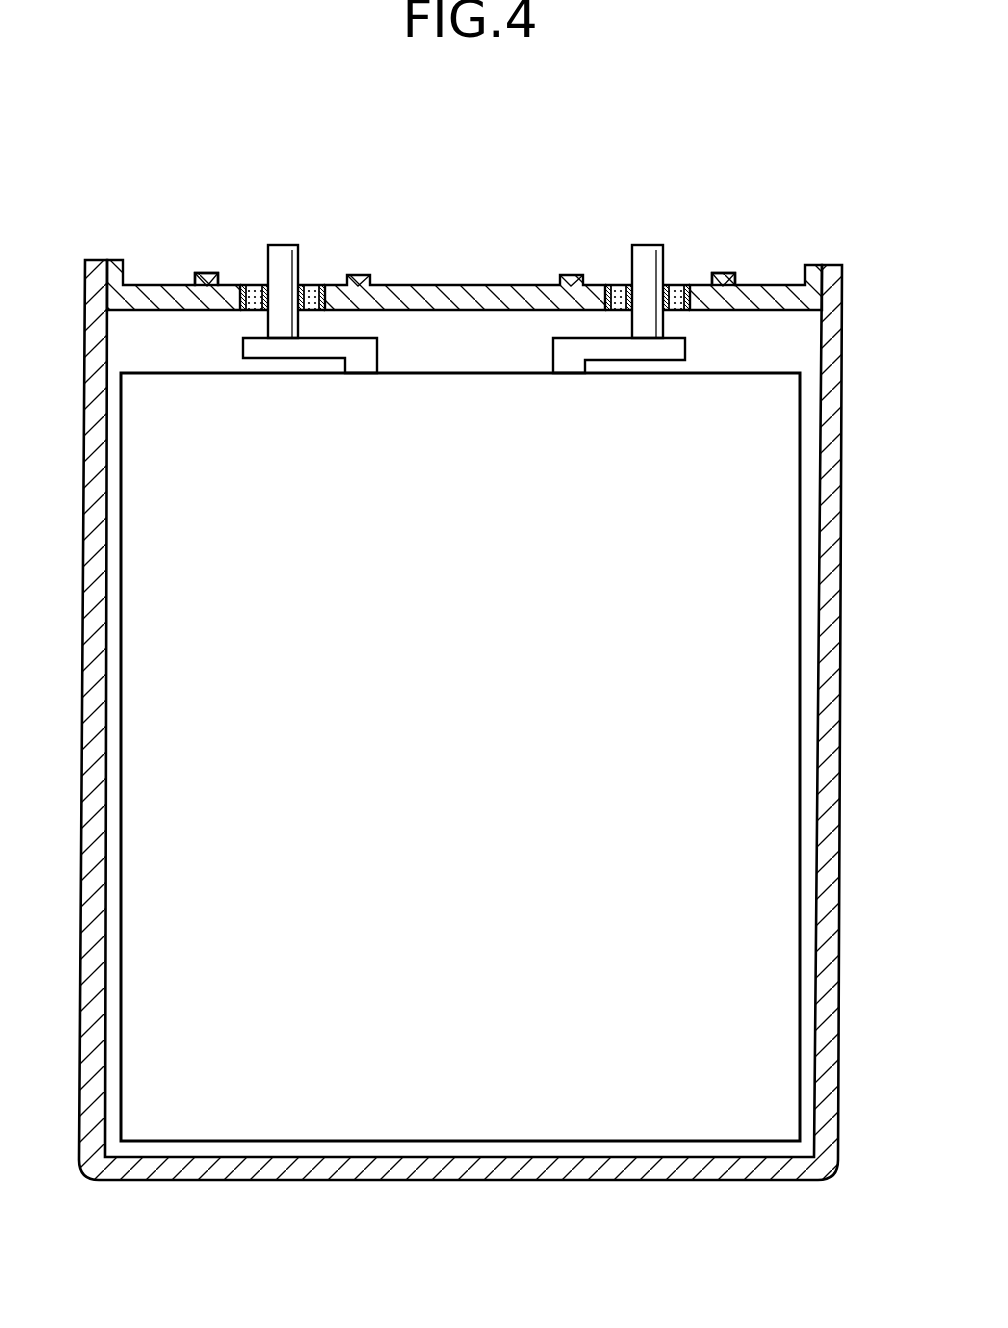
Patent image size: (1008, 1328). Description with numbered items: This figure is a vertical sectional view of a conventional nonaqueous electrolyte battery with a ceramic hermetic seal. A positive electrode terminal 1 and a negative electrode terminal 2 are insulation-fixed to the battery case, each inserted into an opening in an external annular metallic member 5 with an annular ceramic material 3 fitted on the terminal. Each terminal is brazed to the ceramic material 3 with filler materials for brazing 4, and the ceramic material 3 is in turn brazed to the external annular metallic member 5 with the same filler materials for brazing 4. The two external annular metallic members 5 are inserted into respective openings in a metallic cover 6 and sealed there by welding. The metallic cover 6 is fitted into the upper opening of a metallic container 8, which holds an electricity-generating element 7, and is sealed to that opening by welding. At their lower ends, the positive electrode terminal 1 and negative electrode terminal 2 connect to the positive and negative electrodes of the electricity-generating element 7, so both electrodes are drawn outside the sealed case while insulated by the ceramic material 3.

The positive electrode terminal 1 is at (645, 253).
The negative electrode terminal 2 is at (280, 253).
The ceramic material 3 is at (250, 312).
The filler materials for brazing 4 is at (263, 285).
The external annular metallic member 5 is at (225, 285).
The metallic cover 6 is at (458, 287).
The electricity-generating element 7 is at (777, 610).
The metallic container 8 is at (827, 697).